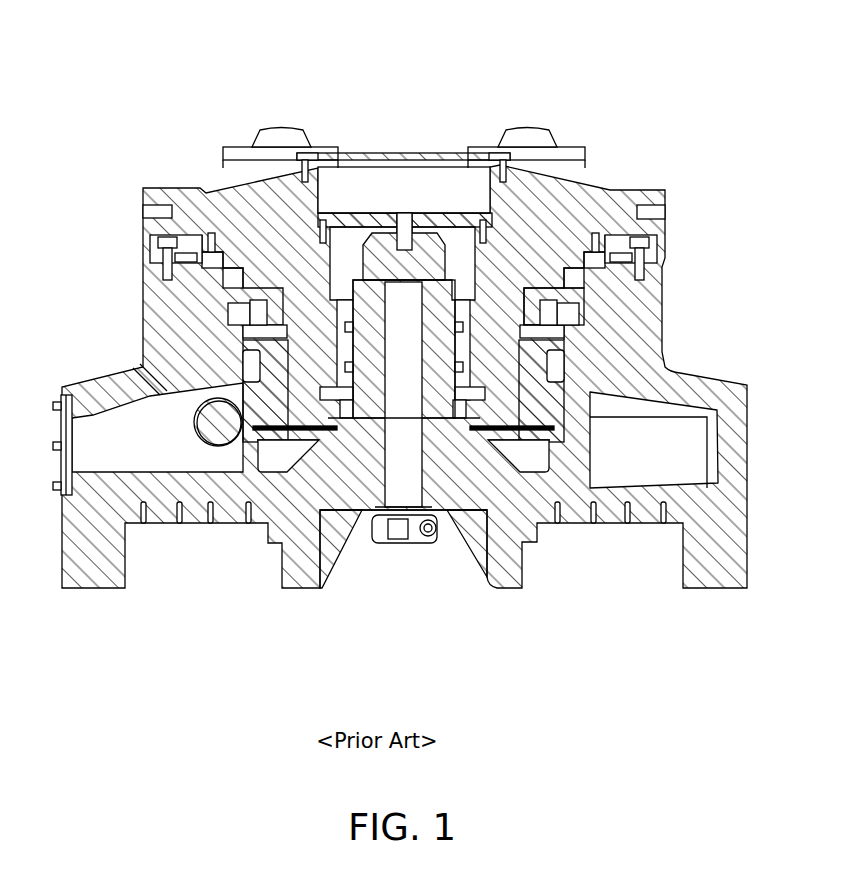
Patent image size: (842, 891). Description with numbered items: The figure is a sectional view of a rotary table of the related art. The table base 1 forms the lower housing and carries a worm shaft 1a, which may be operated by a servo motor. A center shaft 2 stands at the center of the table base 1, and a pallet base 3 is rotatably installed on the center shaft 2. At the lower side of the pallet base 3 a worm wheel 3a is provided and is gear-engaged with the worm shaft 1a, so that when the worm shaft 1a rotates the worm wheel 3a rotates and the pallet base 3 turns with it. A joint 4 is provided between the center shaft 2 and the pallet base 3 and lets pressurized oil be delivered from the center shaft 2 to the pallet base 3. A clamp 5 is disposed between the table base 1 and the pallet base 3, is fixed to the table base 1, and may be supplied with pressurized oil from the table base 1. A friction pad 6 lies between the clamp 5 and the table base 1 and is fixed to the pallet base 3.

The table base 1 is at (506, 541).
The worm shaft 1a is at (213, 433).
The center shaft 2 is at (407, 480).
The pallet base 3 is at (531, 192).
The worm wheel 3a is at (258, 422).
The joint 4 is at (372, 325).
The clamp 5 is at (617, 240).
The friction pad 6 is at (614, 291).